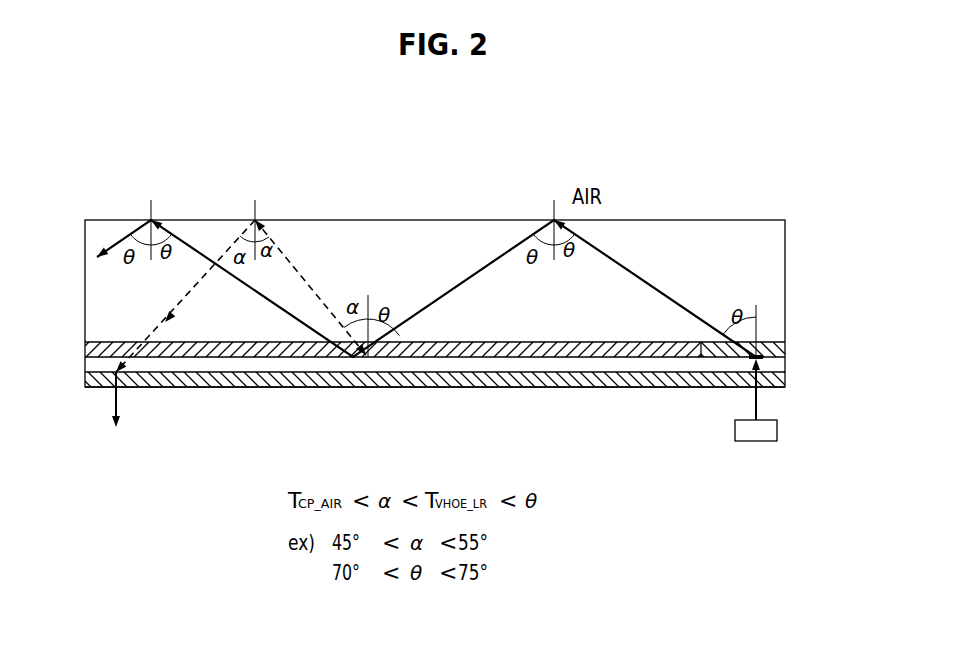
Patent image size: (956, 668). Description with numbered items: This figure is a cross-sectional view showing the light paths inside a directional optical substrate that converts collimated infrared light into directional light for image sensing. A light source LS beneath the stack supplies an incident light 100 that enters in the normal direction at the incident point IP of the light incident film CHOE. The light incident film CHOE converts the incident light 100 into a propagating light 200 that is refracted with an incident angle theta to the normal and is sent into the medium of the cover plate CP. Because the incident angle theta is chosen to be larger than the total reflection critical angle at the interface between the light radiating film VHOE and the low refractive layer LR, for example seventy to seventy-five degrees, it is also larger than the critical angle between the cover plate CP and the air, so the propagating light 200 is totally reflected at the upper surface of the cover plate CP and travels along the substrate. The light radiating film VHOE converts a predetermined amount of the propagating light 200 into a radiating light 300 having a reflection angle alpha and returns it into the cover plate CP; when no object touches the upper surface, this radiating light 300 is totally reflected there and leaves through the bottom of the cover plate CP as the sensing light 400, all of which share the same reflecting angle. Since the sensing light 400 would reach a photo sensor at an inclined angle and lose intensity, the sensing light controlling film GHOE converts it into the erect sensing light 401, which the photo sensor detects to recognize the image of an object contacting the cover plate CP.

The incident light 100 is at (456, 394).
The propagating light 200 is at (119, 240).
The radiating light 300 is at (300, 272).
The sensing light 400 is at (182, 308).
The erect sensing light 401 is at (114, 400).
The cover plate CP is at (734, 232).
The light radiating film VHOE is at (610, 350).
The light incident film CHOE is at (716, 352).
The sensing light controlling film GHOE is at (415, 378).
The low refractive layer LR is at (527, 363).
The light source LS is at (778, 433).
The incident point IP is at (763, 357).